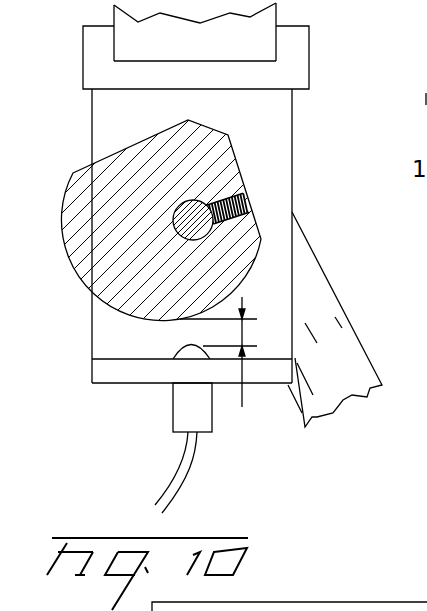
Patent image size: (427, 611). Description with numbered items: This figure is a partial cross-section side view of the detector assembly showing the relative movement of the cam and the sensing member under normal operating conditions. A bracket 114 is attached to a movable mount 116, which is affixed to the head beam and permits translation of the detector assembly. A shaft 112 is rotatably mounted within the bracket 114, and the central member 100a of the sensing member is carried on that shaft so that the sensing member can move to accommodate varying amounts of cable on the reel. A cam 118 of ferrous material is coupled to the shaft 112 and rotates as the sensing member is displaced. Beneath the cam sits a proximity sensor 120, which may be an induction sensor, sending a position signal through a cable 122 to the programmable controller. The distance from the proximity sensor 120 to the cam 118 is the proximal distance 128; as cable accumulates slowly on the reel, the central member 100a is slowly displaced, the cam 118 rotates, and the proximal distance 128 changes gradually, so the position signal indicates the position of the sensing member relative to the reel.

The movable mount 116 is at (186, 31).
The bracket 114 is at (107, 126).
The cam 118 is at (100, 208).
The shaft 112 is at (233, 165).
The central member 100a is at (310, 268).
The proximal distance 128 is at (242, 393).
The proximity sensor 120 is at (195, 413).
The cable 122 is at (195, 467).